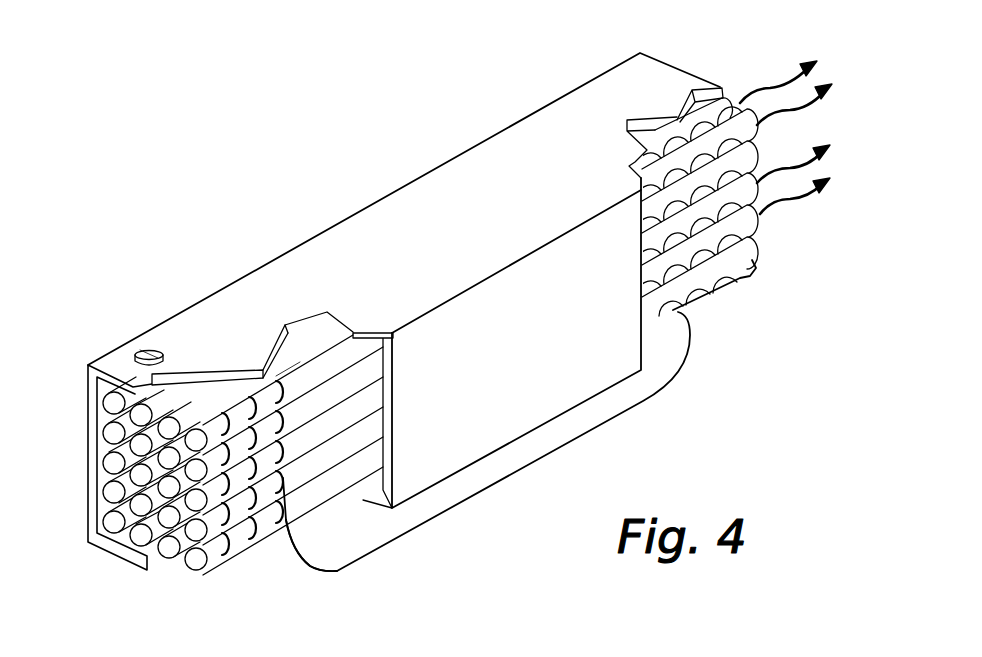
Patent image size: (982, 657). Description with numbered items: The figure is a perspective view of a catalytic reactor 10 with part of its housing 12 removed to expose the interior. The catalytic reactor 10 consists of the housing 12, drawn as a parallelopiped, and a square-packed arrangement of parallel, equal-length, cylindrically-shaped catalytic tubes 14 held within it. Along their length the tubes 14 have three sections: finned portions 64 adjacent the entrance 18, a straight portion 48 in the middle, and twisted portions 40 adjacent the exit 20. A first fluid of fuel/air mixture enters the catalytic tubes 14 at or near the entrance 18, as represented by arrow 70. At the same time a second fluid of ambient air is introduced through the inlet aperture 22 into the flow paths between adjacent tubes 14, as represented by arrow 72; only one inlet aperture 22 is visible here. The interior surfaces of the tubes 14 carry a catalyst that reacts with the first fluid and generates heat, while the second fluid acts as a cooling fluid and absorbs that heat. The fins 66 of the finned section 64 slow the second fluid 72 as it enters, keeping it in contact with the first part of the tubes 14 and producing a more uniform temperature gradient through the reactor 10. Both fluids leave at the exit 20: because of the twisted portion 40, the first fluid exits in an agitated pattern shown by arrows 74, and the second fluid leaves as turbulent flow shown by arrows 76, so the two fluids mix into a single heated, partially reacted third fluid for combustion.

The catalytic reactor 10 is at (318, 171).
The housing 12 is at (441, 167).
The catalytic tubes 14 is at (318, 478).
The entrance 18 is at (103, 414).
The exit 20 is at (664, 62).
The inlet aperture 22 is at (162, 352).
The twisted portion 40 is at (701, 215).
The straight portion 48 is at (531, 467).
The finned portion 64 is at (260, 563).
The fins 66 is at (260, 413).
The arrow 70 is at (122, 468).
The arrow 72 is at (148, 351).
The arrows 74 is at (801, 124).
The arrows 76 is at (810, 124).